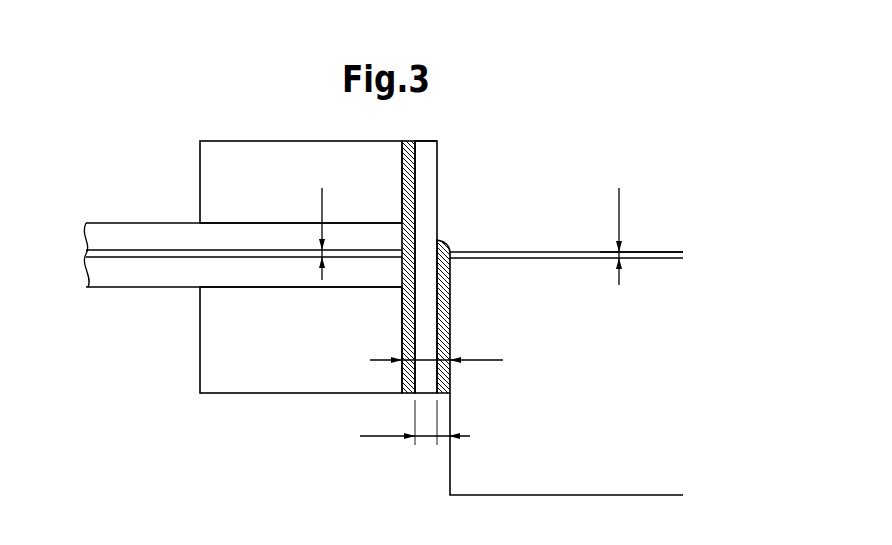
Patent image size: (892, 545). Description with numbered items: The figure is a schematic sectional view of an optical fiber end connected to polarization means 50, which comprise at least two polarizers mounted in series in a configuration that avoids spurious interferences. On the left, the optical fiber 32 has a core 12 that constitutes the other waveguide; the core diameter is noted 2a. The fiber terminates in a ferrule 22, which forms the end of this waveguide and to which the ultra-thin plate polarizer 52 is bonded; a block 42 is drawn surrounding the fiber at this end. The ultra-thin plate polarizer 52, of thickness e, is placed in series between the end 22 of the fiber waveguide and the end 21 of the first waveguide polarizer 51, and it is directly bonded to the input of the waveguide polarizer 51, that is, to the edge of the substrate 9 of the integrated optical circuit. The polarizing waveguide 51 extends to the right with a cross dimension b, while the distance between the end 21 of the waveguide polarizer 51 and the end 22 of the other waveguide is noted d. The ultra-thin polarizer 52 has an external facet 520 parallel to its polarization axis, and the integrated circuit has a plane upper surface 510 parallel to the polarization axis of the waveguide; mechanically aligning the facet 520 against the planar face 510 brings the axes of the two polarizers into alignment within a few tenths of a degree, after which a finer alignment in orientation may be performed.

The optical fiber 32 is at (117, 233).
The core 12 is at (128, 262).
The lower support block 42 is at (210, 382).
The ferrule 22 is at (402, 258).
The ultra-thin plate polarizer 52 is at (430, 173).
The external facet 520 is at (430, 141).
The end of the first waveguide polarizer 21 is at (451, 260).
The waveguide polarizer 51 is at (535, 252).
The upper surface 510 is at (660, 252).
The polarization means 50 is at (555, 172).
The substrate 9 is at (460, 479).
The diameter of the core 2a is at (306, 234).
The cross dimension of the polarizing waveguide b is at (628, 236).
The distance between the ends d is at (436, 348).
The thickness of the second polarizer e is at (415, 422).